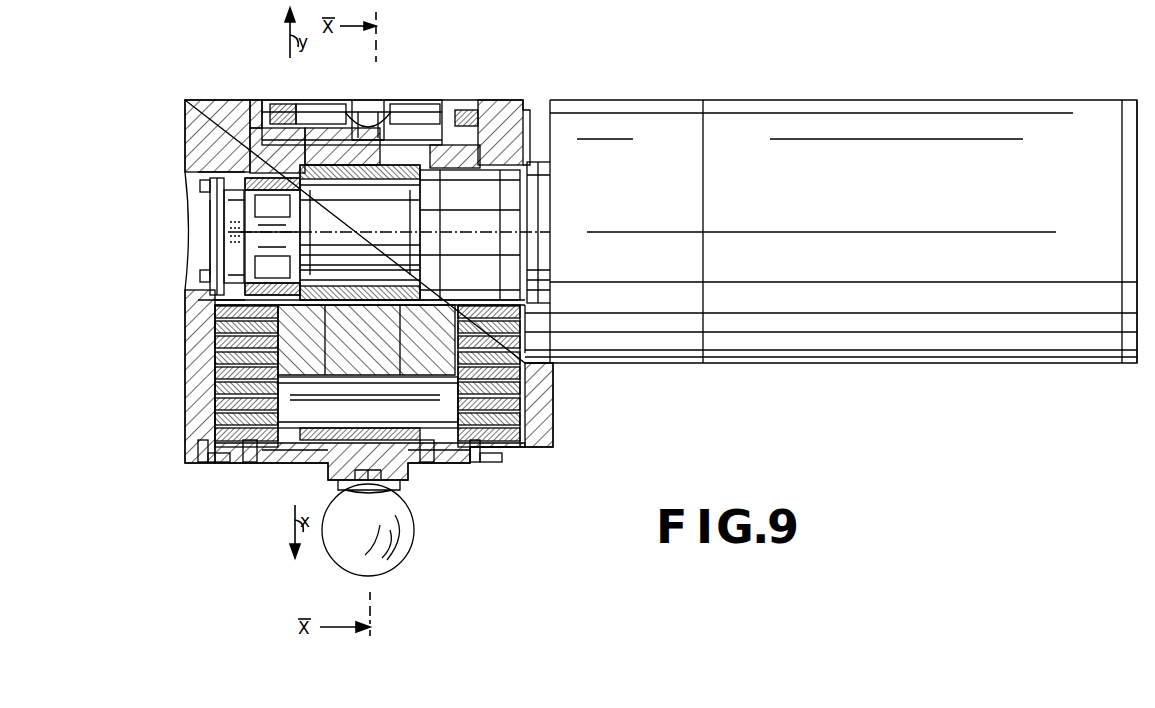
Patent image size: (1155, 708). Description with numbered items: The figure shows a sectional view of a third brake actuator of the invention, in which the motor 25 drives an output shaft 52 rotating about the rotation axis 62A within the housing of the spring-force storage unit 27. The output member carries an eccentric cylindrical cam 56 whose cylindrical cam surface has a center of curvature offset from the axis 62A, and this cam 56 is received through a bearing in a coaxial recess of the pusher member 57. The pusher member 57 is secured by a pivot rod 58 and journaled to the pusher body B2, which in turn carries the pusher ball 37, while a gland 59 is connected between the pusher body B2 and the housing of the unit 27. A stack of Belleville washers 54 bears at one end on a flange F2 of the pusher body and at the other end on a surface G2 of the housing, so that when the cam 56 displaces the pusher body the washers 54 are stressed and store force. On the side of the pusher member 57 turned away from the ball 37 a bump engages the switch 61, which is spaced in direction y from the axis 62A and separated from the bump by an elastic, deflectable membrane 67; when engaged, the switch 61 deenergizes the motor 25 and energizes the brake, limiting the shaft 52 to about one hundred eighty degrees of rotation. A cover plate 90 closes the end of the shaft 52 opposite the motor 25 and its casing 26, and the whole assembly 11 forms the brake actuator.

The turret assembly 11 is at (671, 430).
The motor 25 is at (990, 102).
The tube end 26 is at (588, 102).
The spring-force storage unit 27 is at (496, 100).
The pusher ball 37 is at (400, 528).
The output shaft 52 is at (535, 248).
The Belleville washers 54 is at (220, 398).
The eccentric cylindrical cam 56 is at (265, 172).
The pusher member 57 is at (410, 152).
The pivot rod 58 is at (440, 410).
The gland 59 is at (230, 460).
The switch 61 is at (375, 100).
The rotation axis 62A is at (490, 224).
The elastic deflectable membrane 67 is at (304, 100).
The cover plate 90 is at (210, 200).
The pusher body B2 is at (280, 463).
The fastener F2 is at (422, 463).
The gear G2 is at (220, 310).